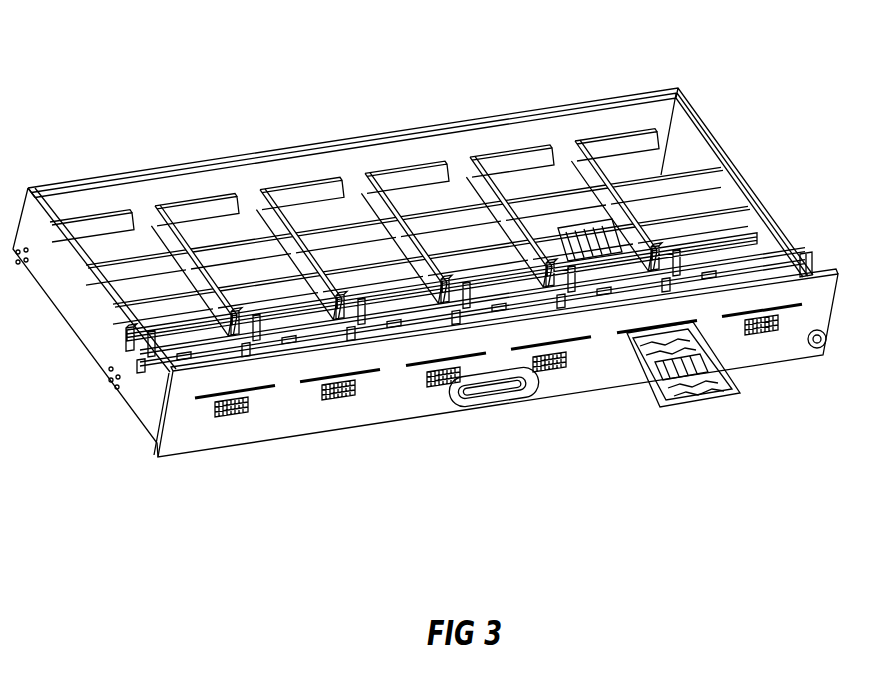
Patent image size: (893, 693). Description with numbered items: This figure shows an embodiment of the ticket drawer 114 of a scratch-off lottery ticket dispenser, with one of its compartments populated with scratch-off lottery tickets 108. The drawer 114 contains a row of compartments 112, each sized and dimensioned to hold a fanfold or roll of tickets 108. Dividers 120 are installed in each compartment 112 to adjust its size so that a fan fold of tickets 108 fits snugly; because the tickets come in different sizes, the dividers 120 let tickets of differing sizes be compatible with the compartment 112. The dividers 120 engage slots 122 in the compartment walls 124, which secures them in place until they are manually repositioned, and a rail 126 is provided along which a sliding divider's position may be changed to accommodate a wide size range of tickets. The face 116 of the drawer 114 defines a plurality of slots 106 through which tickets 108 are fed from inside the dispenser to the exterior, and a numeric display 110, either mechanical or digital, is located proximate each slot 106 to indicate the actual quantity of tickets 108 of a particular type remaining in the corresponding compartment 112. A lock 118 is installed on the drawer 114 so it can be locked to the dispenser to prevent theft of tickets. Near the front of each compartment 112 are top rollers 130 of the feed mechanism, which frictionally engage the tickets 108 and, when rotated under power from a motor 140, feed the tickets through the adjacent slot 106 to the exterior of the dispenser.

The slot 106 is at (373, 372).
The scratch-off lottery tickets 108 is at (682, 363).
The numeric display 110 is at (230, 418).
The compartment 112 is at (150, 318).
The drawer 114 is at (460, 82).
The face 116 is at (297, 418).
The lock 118 is at (817, 350).
The divider 120 is at (662, 213).
The slot 122 is at (597, 155).
The compartment wall 124 is at (623, 185).
The rail 126 is at (700, 226).
The top roller 130 is at (619, 297).
The motor 140 is at (795, 258).